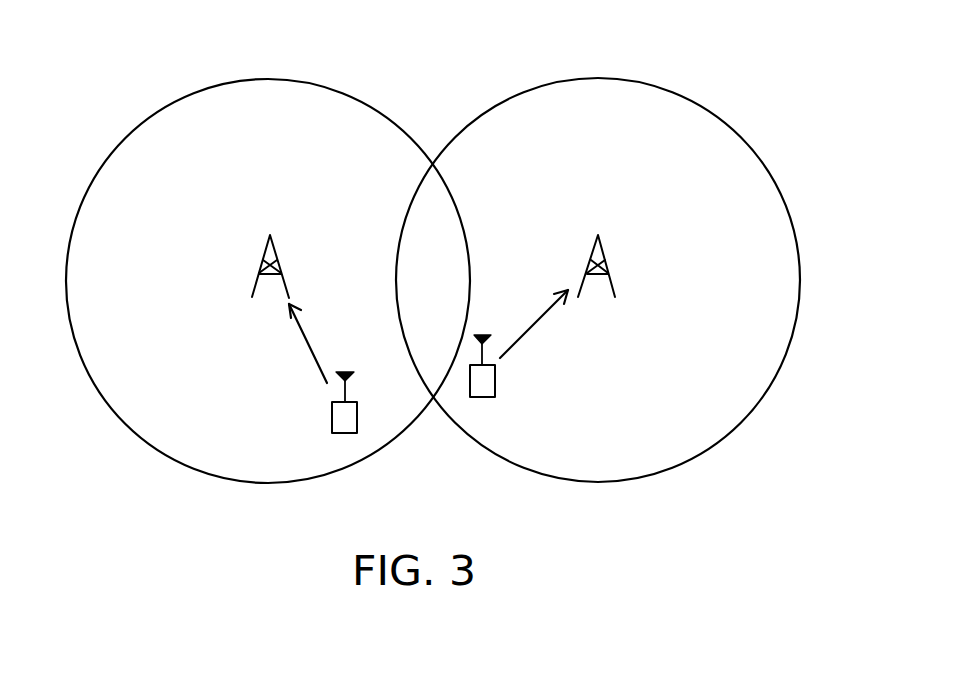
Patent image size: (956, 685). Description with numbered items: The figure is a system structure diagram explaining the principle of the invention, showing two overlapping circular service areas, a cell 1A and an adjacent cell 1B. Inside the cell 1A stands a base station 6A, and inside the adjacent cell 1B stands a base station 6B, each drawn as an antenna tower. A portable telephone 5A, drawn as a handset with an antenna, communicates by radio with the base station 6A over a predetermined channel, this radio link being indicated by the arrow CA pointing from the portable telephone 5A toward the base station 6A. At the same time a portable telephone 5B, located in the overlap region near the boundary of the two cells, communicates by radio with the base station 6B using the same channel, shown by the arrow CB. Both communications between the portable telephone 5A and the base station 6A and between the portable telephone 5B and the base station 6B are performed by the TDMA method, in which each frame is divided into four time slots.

The cell 1A is at (270, 79).
The adjacent cell 1B is at (627, 80).
The base station 6A is at (270, 236).
The base station 6B is at (604, 246).
The portable telephone 5A is at (332, 415).
The portable telephone 5B is at (485, 398).
The communication channel from mobile station 5A to base station 6A CA is at (308, 343).
The communication channel from mobile station 5B to base station 6B CB is at (538, 320).